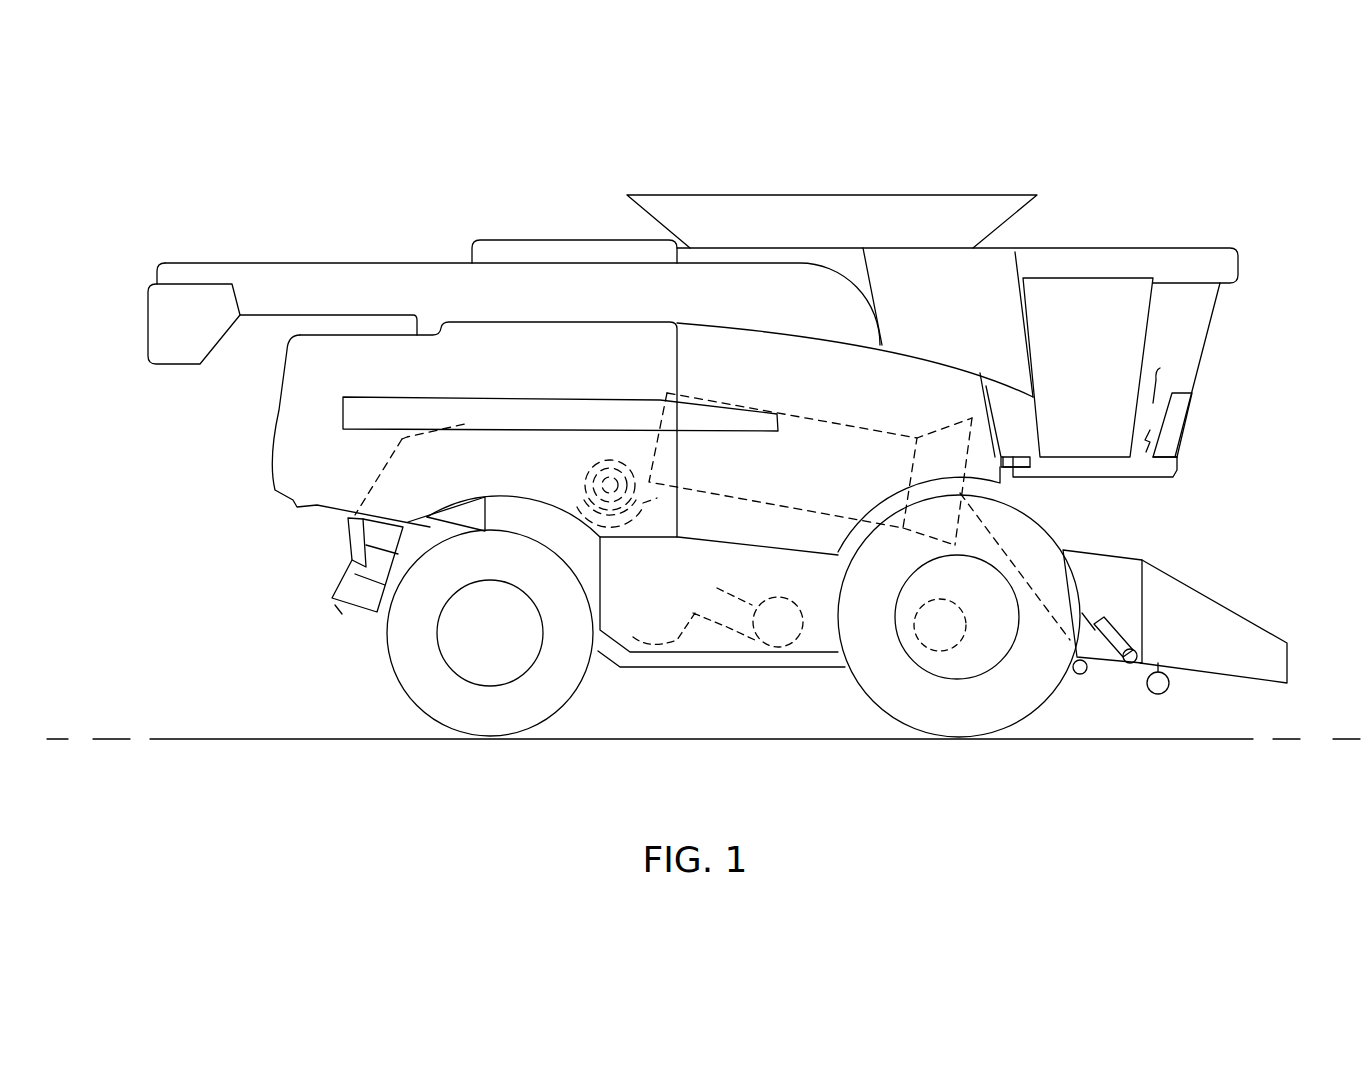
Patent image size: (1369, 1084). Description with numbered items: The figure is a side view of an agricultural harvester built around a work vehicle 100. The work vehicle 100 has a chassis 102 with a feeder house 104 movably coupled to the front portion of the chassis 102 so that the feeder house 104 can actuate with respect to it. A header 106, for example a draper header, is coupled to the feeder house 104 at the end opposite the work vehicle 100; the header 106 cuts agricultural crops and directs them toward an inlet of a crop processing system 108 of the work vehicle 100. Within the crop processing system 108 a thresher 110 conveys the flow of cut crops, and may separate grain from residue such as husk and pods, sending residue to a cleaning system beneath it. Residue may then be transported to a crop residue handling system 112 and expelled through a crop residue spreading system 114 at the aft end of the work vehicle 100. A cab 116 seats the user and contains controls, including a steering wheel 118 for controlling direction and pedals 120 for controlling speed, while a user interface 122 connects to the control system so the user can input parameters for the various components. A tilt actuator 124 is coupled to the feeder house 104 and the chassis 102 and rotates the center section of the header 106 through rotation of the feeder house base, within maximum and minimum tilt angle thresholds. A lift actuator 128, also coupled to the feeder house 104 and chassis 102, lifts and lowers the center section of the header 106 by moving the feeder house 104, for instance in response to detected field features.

The work vehicle 100 is at (1237, 152).
The chassis 102 is at (656, 670).
The feeder house 104 is at (1102, 585).
The header 106 is at (1223, 627).
The crop processing system 108 is at (819, 393).
The thresher 110 is at (832, 415).
The crop residue handling system 112 is at (539, 396).
The crop residue spreading system 114 is at (335, 580).
The cab 116 is at (1240, 310).
The steering wheel 118 is at (1158, 373).
The pedals 120 is at (1150, 462).
The user interface 122 is at (1174, 424).
The tilt actuator 124 is at (1075, 676).
The lift actuator 128 is at (1112, 653).